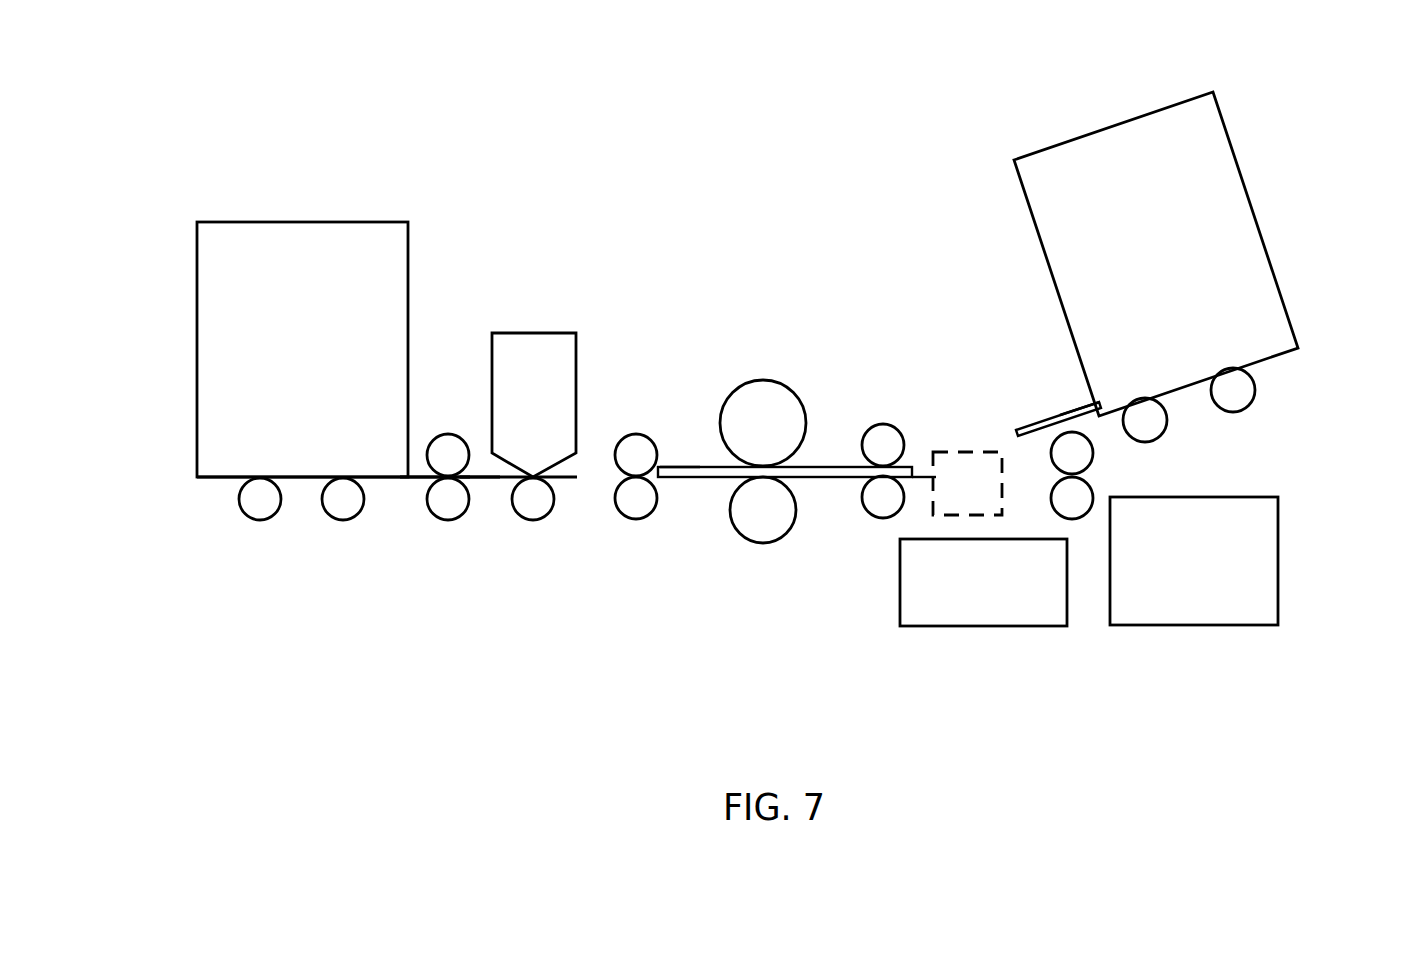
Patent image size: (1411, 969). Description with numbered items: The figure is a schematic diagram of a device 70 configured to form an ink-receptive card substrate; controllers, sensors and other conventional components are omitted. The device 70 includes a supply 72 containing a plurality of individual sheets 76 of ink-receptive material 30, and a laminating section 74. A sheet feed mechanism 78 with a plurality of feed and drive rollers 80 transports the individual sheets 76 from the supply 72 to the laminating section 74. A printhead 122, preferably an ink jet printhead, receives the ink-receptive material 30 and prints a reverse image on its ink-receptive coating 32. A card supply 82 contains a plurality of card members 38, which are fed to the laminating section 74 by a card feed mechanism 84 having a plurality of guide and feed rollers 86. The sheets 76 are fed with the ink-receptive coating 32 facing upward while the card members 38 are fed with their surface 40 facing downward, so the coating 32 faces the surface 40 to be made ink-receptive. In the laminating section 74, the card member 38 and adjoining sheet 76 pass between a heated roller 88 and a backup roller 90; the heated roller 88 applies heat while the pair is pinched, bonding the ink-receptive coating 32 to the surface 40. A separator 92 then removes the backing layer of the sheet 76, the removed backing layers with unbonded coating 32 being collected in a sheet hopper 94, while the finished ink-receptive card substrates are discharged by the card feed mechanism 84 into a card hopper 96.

The device 70 is at (144, 139).
The supply 72 is at (207, 302).
The laminating section 74 is at (811, 272).
The sheet 76 is at (484, 478).
The sheet feed mechanism 78 is at (327, 554).
The feed and drive rollers 80 is at (245, 515).
The card supply 82 is at (1237, 173).
The card feed mechanism 84 is at (1278, 423).
The guide and feed rollers 86 is at (885, 430).
The heated roller 88 is at (765, 532).
The backup roller 90 is at (773, 398).
The separator 92 is at (947, 452).
The sheet hopper 94 is at (977, 627).
The card hopper 96 is at (1278, 590).
The ink-receptive material 30 is at (418, 478).
The ink-receptive coating 32 is at (478, 477).
The card member 38 is at (682, 467).
The surface 40 is at (1072, 427).
The printhead 122 is at (542, 343).